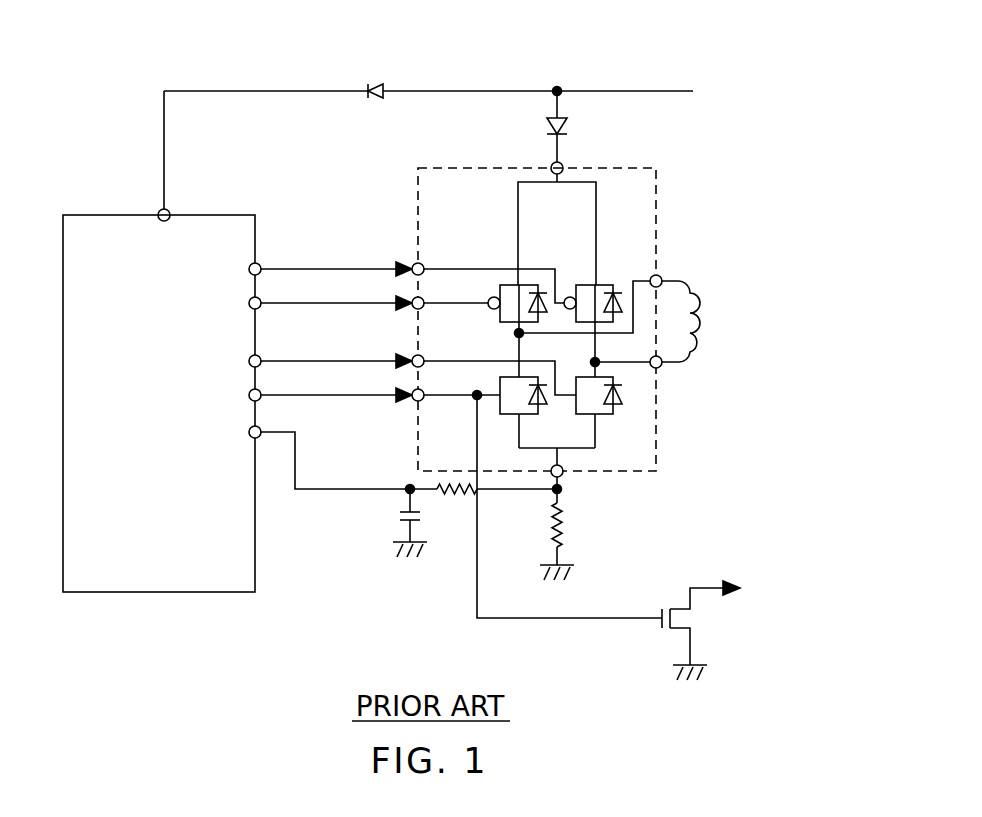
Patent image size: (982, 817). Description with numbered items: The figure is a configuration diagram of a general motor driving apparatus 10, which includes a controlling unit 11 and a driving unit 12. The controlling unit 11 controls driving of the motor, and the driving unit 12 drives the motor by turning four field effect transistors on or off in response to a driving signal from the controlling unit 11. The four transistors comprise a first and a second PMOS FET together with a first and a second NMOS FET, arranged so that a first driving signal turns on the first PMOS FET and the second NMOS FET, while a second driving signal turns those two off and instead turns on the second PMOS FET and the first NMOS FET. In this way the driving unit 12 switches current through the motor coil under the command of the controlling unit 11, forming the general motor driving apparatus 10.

The motor driving apparatus 10 is at (385, 27).
The controlling unit 11 is at (213, 214).
The driving unit 12 is at (598, 168).